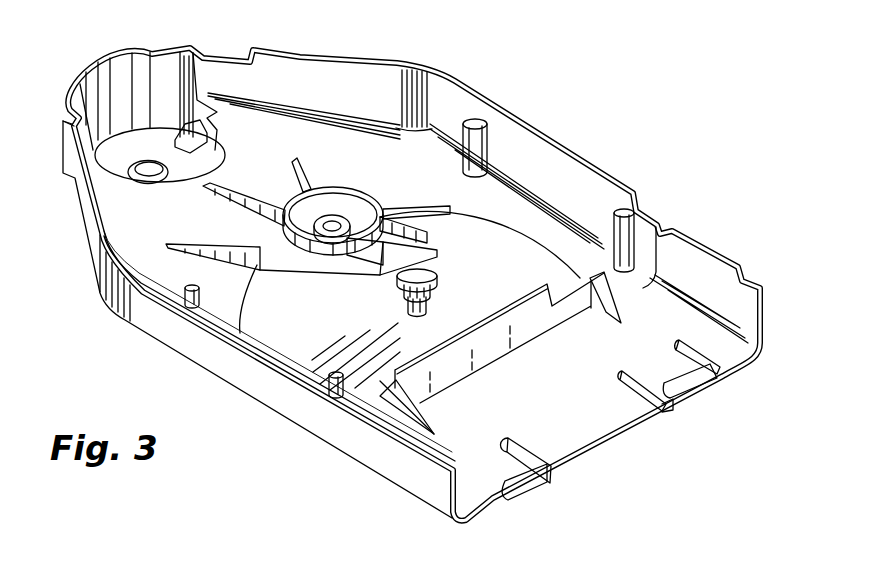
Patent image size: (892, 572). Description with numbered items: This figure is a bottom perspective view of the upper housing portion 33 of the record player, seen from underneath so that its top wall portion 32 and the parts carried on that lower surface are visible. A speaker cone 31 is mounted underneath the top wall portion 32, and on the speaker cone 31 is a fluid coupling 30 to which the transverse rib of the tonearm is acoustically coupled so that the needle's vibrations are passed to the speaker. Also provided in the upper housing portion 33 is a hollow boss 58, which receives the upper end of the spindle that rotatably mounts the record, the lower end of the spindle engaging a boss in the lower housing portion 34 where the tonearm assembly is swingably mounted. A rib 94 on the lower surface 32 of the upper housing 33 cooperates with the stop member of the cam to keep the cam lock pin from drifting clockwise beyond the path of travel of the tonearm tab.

The fluid coupling 30 is at (420, 270).
The speaker cone 31 is at (507, 260).
The top wall portion 32 is at (415, 157).
The upper housing portion 33 is at (524, 106).
The lower housing portion 34 is at (167, 287).
The hollow boss 58 is at (331, 218).
The rib 94 is at (397, 273).